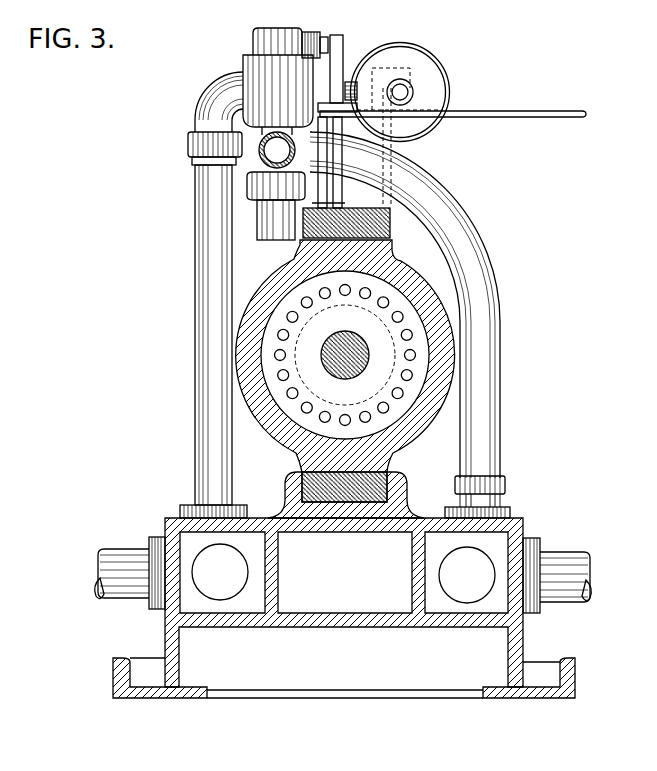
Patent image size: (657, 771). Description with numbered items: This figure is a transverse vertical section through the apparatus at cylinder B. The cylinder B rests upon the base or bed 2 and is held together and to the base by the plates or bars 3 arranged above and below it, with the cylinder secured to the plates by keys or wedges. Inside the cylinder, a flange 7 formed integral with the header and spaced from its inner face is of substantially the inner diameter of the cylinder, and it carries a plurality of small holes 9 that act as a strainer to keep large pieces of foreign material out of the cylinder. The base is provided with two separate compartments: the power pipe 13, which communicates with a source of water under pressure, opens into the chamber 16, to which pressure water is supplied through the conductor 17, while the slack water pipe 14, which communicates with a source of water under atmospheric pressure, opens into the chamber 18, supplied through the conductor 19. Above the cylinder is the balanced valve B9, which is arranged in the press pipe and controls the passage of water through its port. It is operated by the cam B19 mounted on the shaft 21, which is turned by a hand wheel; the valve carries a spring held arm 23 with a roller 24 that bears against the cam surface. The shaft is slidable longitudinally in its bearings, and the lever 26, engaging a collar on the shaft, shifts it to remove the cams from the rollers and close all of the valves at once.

The base or bed 2 is at (523, 642).
The plates or bars 3 is at (385, 220).
The flange 7 is at (356, 355).
The small holes 9 is at (309, 304).
The power pipe 13 is at (205, 276).
The slack water pipe 14 is at (228, 172).
The chamber 16 is at (220, 572).
The conductor 17 is at (118, 551).
The chamber 18 is at (467, 575).
The conductor 19 is at (574, 561).
The shaft 21 is at (412, 92).
The spring held arm 23 is at (338, 66).
The roller 24 is at (358, 87).
The lever 26 is at (541, 115).
The cylinder B is at (396, 268).
The valve B9 is at (272, 92).
The cam B19 is at (437, 75).